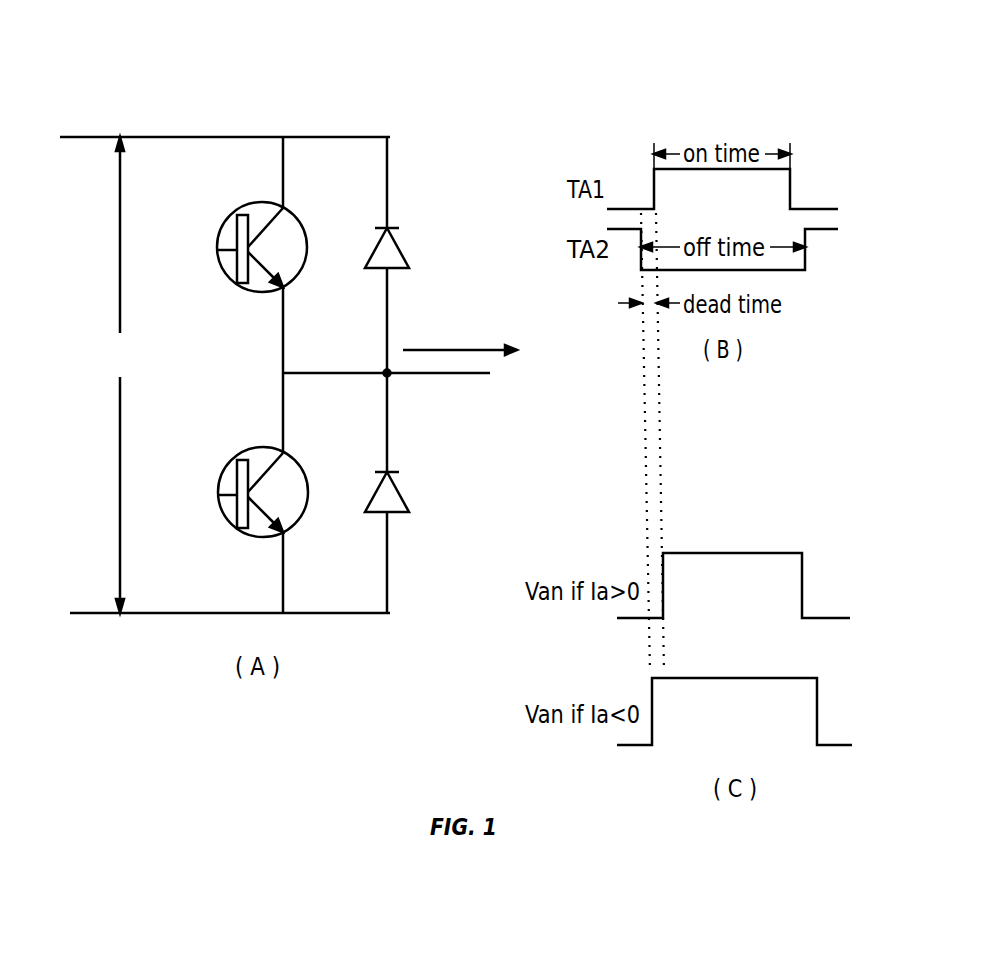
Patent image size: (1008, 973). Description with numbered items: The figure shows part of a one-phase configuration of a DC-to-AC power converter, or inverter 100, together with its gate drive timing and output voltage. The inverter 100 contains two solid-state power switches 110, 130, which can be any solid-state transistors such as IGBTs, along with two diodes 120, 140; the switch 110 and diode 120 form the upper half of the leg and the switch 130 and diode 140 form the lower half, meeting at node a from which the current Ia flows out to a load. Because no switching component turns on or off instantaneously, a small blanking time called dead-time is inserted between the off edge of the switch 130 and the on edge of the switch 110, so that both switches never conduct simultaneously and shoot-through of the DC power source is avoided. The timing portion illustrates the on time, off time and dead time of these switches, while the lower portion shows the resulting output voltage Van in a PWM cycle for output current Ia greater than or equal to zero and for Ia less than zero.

The DC-to-AC power converter 100 is at (388, 53).
The solid-state power switch 110 is at (218, 232).
The diode 120 is at (395, 270).
The solid-state power switch 130 is at (223, 518).
The diode 140 is at (397, 512).